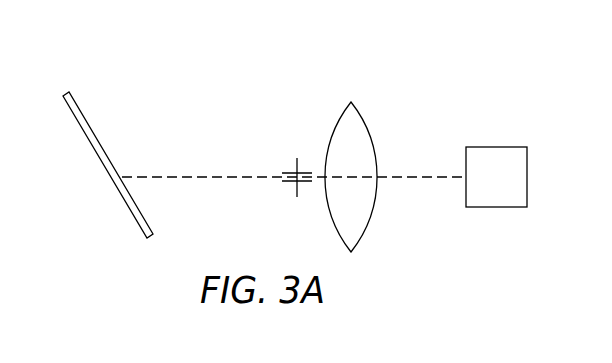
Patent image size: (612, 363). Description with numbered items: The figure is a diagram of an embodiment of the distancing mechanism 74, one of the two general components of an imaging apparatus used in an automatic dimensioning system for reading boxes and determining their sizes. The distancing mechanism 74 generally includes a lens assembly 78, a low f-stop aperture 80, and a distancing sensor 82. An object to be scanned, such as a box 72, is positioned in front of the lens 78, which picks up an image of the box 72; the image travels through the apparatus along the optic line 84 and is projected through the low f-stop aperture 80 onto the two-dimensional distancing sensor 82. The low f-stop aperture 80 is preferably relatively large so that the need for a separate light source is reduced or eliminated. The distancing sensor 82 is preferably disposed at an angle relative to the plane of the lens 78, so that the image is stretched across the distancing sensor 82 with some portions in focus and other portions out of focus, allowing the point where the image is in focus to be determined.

The distancing mechanism 74 is at (165, 45).
The distancing sensor 82 is at (79, 103).
The low f-stop aperture 80 is at (297, 158).
The lens assembly 78 is at (368, 122).
The optic line 84 is at (423, 177).
The box 72 is at (495, 147).